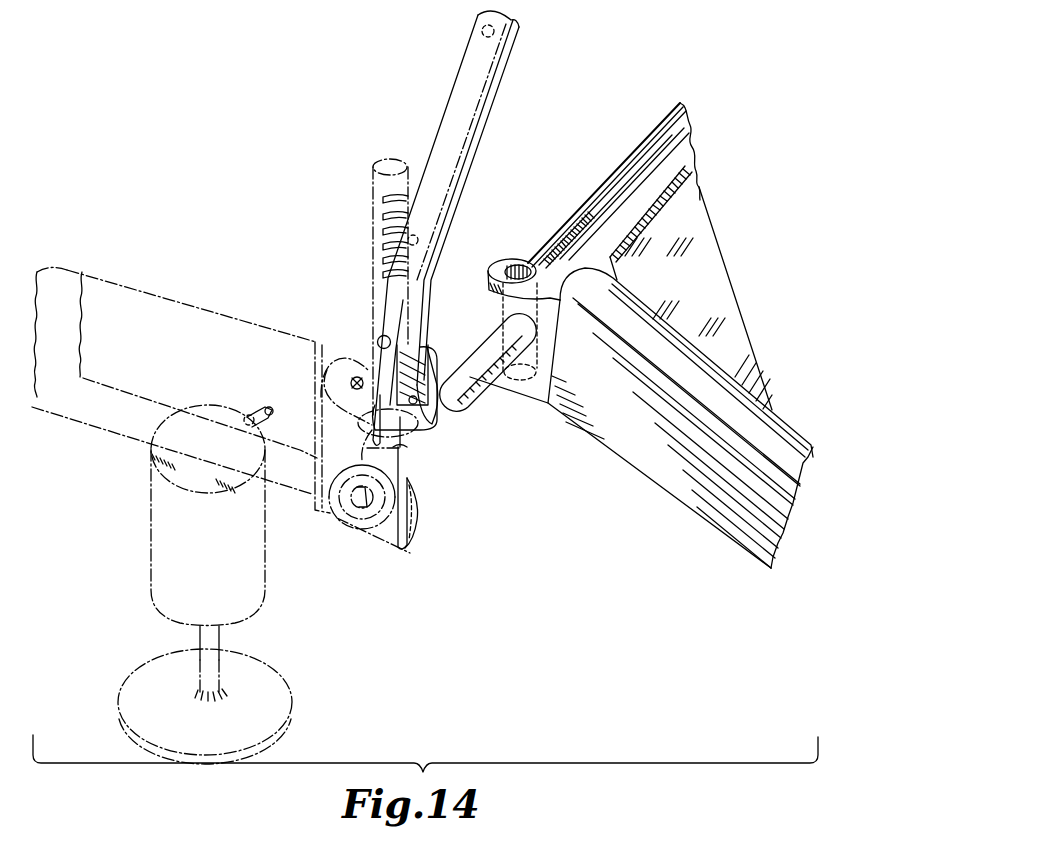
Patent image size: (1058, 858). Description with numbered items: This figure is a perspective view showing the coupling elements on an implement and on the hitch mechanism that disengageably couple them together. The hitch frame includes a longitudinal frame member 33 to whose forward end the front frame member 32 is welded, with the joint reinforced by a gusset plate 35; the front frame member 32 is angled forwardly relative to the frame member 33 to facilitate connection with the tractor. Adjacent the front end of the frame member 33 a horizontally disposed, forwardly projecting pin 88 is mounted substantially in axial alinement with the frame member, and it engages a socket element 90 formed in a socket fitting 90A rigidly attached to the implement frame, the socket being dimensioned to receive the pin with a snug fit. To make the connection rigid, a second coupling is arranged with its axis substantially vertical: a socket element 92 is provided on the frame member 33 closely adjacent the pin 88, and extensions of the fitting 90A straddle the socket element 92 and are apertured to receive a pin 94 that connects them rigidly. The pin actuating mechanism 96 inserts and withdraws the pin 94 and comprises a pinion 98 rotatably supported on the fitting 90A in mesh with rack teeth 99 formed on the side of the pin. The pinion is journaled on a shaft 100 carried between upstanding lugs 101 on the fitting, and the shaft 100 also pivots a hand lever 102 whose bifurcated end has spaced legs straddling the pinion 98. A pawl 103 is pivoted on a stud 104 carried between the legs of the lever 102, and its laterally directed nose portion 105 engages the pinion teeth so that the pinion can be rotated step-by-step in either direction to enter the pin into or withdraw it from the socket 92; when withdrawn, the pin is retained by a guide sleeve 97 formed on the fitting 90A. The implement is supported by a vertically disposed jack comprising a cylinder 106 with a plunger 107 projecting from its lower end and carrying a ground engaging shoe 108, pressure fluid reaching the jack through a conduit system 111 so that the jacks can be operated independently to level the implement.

The front frame member 32 is at (670, 483).
The longitudinal frame member 33 is at (643, 133).
The gusset plate 35 is at (703, 267).
The pin 88 is at (480, 398).
The socket element 90 is at (360, 529).
The socket fitting 90A is at (410, 550).
The socket element 92 is at (514, 262).
The pin 94 is at (372, 187).
The pin actuating mechanism 96 is at (378, 152).
The guide sleeve 97 is at (417, 423).
The pinion 98 is at (430, 348).
The rack teeth 99 is at (387, 220).
The shaft 100 is at (354, 376).
The upstanding lug 101 is at (345, 413).
The hand lever 102 is at (510, 47).
The pawl 103 is at (415, 400).
The stud 104 is at (378, 337).
The nose portion 105 is at (412, 405).
The cylinder 106 is at (150, 528).
The plunger 107 is at (220, 637).
The ground engaging shoe 108 is at (287, 675).
The conduit system 111 is at (262, 407).